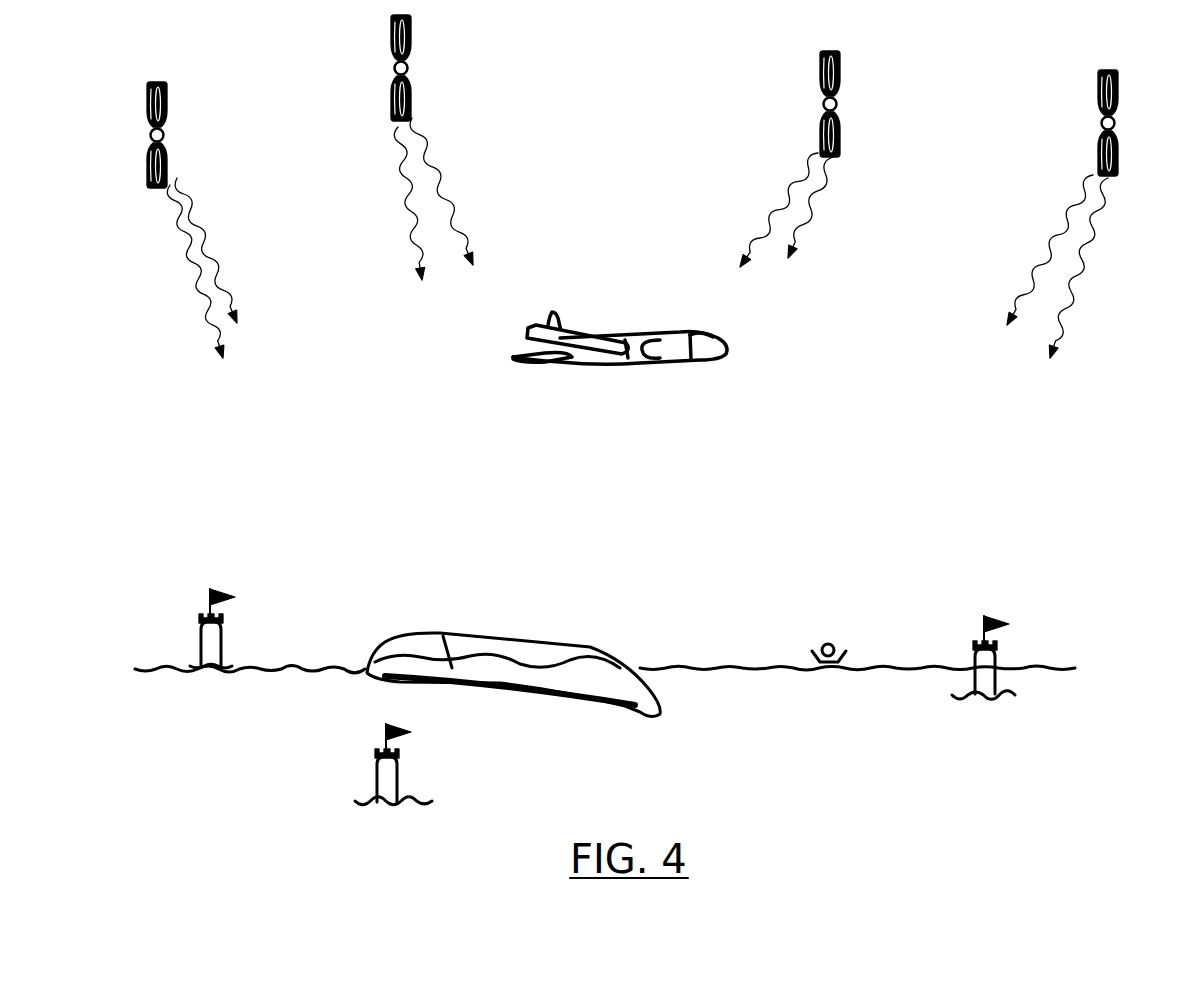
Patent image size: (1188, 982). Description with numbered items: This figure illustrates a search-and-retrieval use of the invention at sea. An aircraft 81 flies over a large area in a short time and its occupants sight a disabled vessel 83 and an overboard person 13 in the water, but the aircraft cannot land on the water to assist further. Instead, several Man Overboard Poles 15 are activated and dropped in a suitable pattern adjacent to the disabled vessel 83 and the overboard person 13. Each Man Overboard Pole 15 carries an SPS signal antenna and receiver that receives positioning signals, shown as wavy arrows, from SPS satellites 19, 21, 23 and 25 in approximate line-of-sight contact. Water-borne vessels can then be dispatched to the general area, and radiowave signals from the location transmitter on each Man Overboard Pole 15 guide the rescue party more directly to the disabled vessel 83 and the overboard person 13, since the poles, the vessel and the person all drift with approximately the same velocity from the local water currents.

The overboard person or object 13 is at (838, 645).
The Man Overboard Pole 15 is at (208, 652).
The SPS satellite 19 is at (170, 117).
The SPS satellite 21 is at (411, 63).
The SPS satellite 23 is at (829, 55).
The SPS satellite 25 is at (1118, 80).
The aircraft 81 is at (732, 343).
The disabled vessel 83 is at (493, 645).